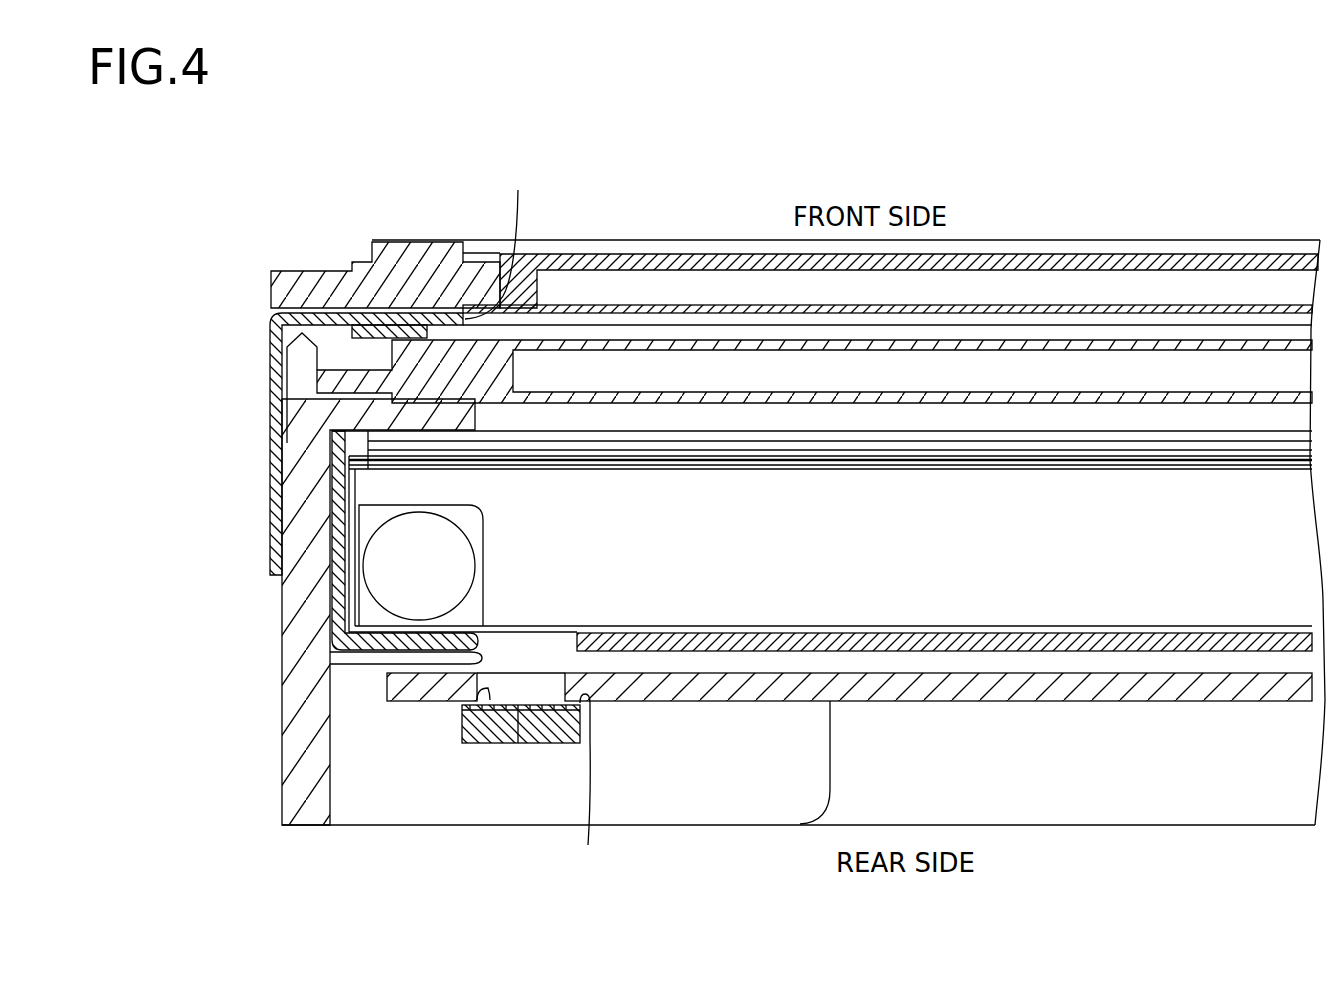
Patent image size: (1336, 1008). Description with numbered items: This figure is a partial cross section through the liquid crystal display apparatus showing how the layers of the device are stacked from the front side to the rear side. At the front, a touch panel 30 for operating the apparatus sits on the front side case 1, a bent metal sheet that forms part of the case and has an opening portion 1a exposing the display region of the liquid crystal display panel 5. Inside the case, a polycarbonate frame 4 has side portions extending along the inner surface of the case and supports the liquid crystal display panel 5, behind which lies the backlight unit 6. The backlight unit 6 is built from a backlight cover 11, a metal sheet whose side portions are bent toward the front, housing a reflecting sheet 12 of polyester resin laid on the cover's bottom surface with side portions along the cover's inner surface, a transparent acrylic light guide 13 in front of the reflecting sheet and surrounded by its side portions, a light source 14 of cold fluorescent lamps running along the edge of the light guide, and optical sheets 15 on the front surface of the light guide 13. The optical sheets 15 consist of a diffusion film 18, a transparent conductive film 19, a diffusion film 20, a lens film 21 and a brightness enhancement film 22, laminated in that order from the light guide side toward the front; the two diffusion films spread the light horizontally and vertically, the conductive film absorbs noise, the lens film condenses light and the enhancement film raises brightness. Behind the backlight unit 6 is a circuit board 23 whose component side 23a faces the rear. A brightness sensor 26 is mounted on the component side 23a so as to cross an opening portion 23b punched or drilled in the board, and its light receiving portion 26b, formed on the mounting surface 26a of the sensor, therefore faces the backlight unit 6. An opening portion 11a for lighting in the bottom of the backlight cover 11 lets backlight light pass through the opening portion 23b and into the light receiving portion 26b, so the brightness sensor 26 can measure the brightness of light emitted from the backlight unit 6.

The front side case 1 is at (278, 318).
The opening portion 1a is at (498, 239).
The frame 4 is at (298, 397).
The liquid crystal display panel 5 is at (315, 374).
The backlight unit 6 is at (166, 408).
The backlight cover 11 is at (325, 624).
The opening portion for lighting 11a is at (330, 658).
The reflecting sheet 12 is at (352, 603).
The light guide 13 is at (380, 493).
The light source 14 is at (380, 561).
The optical sheets 15 is at (206, 410).
The diffusion film 18 is at (376, 465).
The transparent conductive film 19 is at (376, 457).
The diffusion film 20 is at (376, 450).
The lens film 21 is at (376, 442).
The brightness enhancement film 22 is at (370, 432).
The circuit board 23 is at (390, 680).
The component side 23a is at (460, 706).
The opening portion 23b is at (467, 723).
The brightness sensor 26 is at (477, 742).
The mounting surface 26a is at (588, 845).
The light receiving portion 26b is at (515, 744).
The touch panel 30 is at (271, 282).